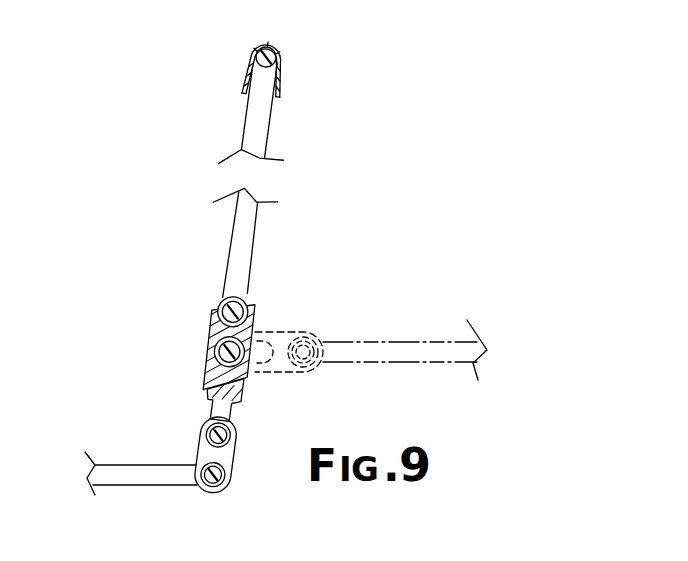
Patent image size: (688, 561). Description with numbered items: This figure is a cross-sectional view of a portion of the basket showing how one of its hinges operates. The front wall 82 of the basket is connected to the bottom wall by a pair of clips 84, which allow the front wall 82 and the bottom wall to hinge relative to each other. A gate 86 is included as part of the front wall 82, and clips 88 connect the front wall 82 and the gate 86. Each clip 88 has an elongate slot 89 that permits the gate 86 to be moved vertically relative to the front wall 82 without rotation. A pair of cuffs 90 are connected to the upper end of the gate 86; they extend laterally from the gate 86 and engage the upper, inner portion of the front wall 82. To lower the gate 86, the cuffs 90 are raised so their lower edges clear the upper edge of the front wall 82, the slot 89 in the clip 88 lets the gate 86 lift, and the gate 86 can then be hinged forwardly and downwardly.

The front wall 82 is at (262, 120).
The cuffs 90 is at (282, 63).
The clips 88 is at (207, 333).
The elongate slot 89 is at (207, 392).
The clips 84 is at (240, 440).
The gate 86 is at (373, 363).